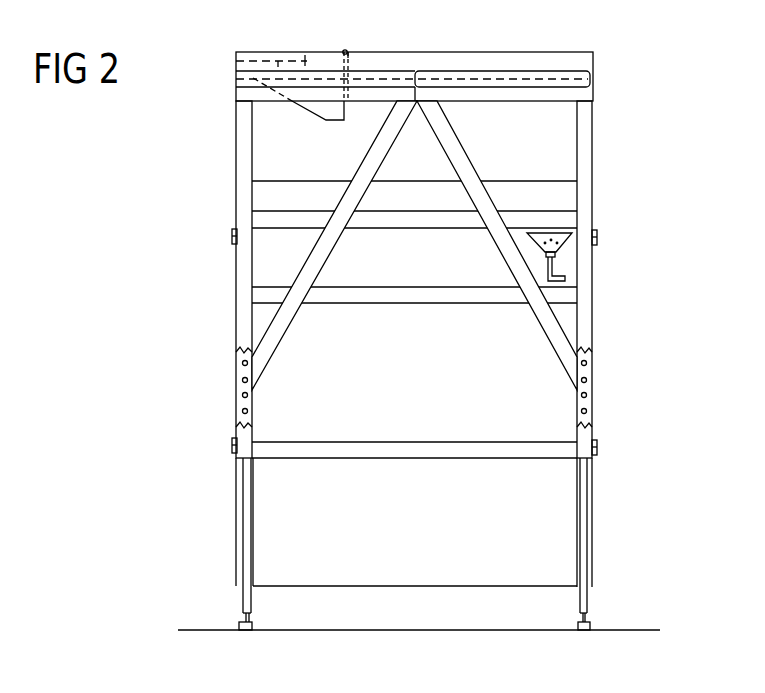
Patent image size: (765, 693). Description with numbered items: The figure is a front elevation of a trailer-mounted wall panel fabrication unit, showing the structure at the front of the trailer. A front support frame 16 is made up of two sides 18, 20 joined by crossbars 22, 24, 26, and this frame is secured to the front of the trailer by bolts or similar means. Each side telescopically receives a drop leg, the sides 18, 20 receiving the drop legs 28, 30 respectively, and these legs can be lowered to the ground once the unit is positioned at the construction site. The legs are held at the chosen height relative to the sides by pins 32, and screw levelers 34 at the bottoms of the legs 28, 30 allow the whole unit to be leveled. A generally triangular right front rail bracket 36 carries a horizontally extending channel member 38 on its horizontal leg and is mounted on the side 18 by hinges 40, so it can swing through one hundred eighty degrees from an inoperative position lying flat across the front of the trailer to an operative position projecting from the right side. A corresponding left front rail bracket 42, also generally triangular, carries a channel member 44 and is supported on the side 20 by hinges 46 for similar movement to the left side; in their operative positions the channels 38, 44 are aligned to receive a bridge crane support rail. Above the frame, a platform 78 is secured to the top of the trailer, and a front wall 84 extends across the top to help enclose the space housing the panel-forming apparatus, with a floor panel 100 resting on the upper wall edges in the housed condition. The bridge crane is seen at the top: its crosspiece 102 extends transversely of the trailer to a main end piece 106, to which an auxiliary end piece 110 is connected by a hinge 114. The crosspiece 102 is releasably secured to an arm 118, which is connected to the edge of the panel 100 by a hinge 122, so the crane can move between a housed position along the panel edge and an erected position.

The front support frame 16 is at (206, 404).
The side 18 is at (249, 418).
The side 20 is at (590, 357).
The crossbar 22 is at (395, 222).
The crossbar 24 is at (420, 296).
The crossbar 26 is at (398, 452).
The drop leg 28 is at (246, 525).
The drop leg 30 is at (584, 525).
The pin 32 is at (243, 364).
The screw leveler 34 is at (252, 627).
The right front rail bracket 36 is at (315, 270).
The channel member 38 is at (416, 72).
The hinge 40 is at (232, 237).
The left front rail bracket 42 is at (465, 184).
The channel member 44 is at (541, 74).
The hinge 46 is at (598, 237).
The platform 78 is at (565, 199).
The front wall 84 is at (565, 140).
The floor panel 100 is at (488, 58).
The crosspiece 102 is at (253, 61).
The main end piece 106 is at (316, 60).
The auxiliary end piece 110 is at (379, 63).
The hinge 114 is at (352, 50).
The arm 118 is at (253, 78).
The hinge 122 is at (343, 50).